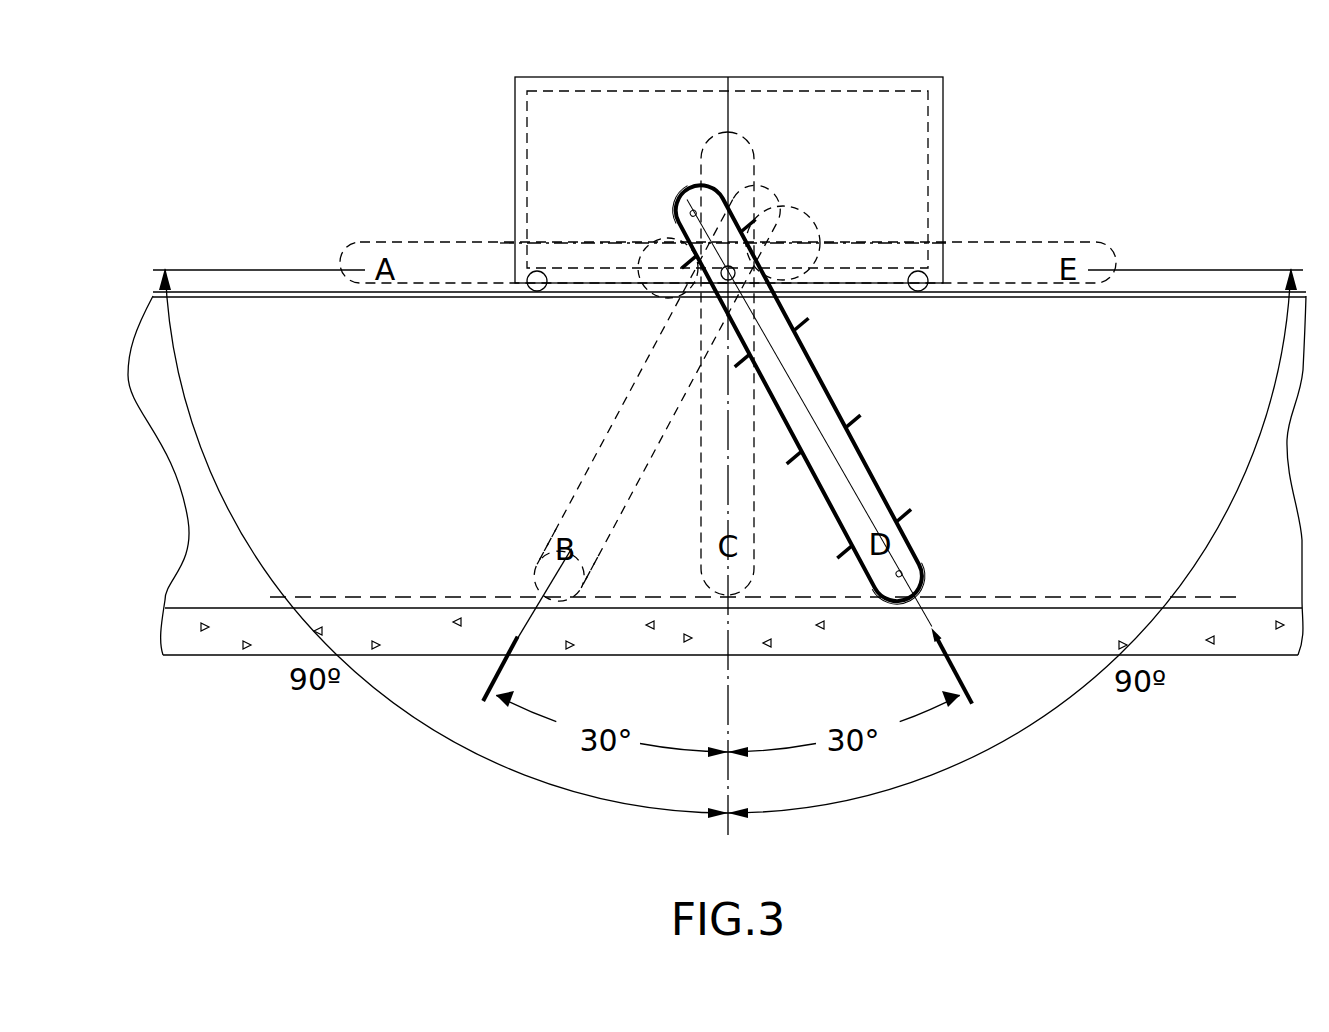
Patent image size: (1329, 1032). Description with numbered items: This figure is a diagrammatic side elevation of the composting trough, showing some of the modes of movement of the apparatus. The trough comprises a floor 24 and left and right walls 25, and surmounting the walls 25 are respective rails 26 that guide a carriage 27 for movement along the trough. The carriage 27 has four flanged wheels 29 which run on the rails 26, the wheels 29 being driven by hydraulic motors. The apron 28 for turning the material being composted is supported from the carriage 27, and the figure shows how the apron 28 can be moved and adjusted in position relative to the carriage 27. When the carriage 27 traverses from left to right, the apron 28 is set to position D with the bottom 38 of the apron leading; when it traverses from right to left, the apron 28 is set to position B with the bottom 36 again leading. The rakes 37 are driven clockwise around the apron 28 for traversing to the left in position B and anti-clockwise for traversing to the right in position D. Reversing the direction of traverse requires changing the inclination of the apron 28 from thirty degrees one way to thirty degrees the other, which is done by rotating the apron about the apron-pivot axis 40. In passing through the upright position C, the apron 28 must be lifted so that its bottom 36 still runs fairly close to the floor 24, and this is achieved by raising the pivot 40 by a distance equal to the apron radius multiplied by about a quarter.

The floor 24 is at (355, 612).
The walls 25 is at (717, 475).
The rails 26 is at (222, 292).
The carriage 27 is at (515, 150).
The apron 28 is at (600, 452).
The flanged wheels 29 is at (537, 293).
The bottom of the apron 36 is at (524, 579).
The rakes 37 is at (862, 428).
The bottom of the apron 38 is at (836, 446).
The apron-pivot axis 40 is at (775, 235).